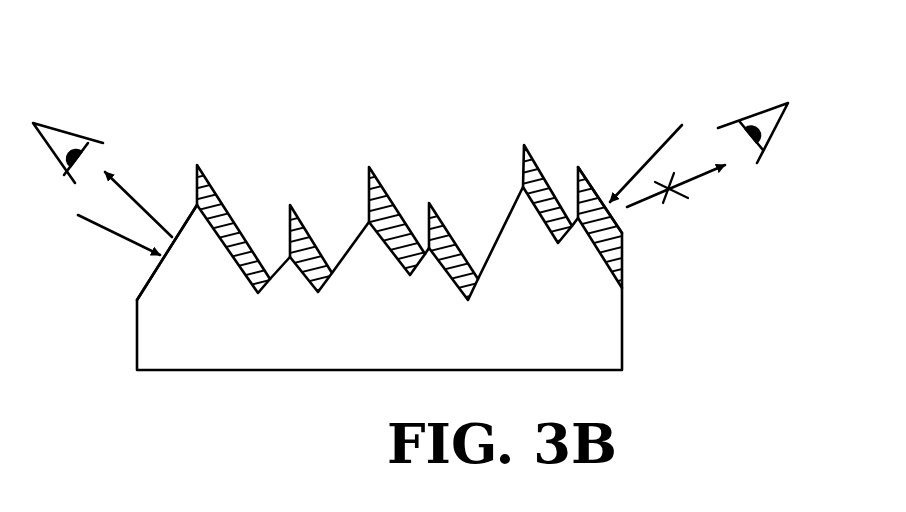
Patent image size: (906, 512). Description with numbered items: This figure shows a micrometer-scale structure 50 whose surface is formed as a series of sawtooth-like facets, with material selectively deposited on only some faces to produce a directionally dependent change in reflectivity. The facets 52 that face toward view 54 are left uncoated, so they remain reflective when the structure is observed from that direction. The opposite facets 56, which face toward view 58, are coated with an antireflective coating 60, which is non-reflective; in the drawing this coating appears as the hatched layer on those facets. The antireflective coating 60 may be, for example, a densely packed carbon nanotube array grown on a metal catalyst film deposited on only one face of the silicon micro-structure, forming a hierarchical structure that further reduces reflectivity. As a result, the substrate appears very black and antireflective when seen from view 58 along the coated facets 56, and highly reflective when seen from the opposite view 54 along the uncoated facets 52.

The micrometer-scale structure 50 is at (434, 346).
The facets 52 is at (146, 283).
The view 54 is at (88, 132).
The facets 56 is at (610, 266).
The view 58 is at (753, 104).
The antireflective coating 60 is at (613, 221).